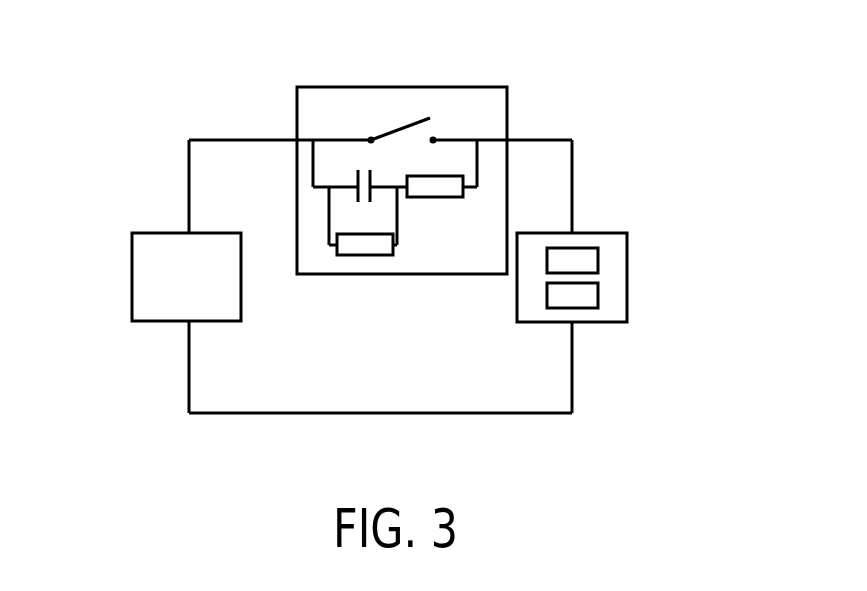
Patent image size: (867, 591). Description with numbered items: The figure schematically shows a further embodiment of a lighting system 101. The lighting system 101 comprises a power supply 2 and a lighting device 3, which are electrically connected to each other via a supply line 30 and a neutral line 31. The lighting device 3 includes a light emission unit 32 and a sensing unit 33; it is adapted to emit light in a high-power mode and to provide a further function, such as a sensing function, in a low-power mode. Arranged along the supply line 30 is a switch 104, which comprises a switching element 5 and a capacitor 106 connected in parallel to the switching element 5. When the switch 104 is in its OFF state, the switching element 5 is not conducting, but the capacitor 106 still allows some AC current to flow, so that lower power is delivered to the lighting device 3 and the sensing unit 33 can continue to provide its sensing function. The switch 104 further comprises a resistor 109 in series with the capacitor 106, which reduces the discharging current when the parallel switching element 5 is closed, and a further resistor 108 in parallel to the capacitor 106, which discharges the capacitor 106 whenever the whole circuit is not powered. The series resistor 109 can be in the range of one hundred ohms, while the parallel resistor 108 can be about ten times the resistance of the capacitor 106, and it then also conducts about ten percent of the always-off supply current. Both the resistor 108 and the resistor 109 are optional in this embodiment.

The lighting system 101 is at (637, 74).
The switch 104 is at (454, 87).
The switching element 5 is at (385, 108).
The capacitor 106 is at (342, 167).
The resistor 108 is at (363, 269).
The resistor 109 is at (446, 163).
The power supply 2 is at (146, 321).
The lighting device 3 is at (627, 273).
The light emission unit 32 is at (598, 252).
The sensing unit 33 is at (598, 300).
The supply line 30 is at (128, 172).
The neutral line 31 is at (170, 412).